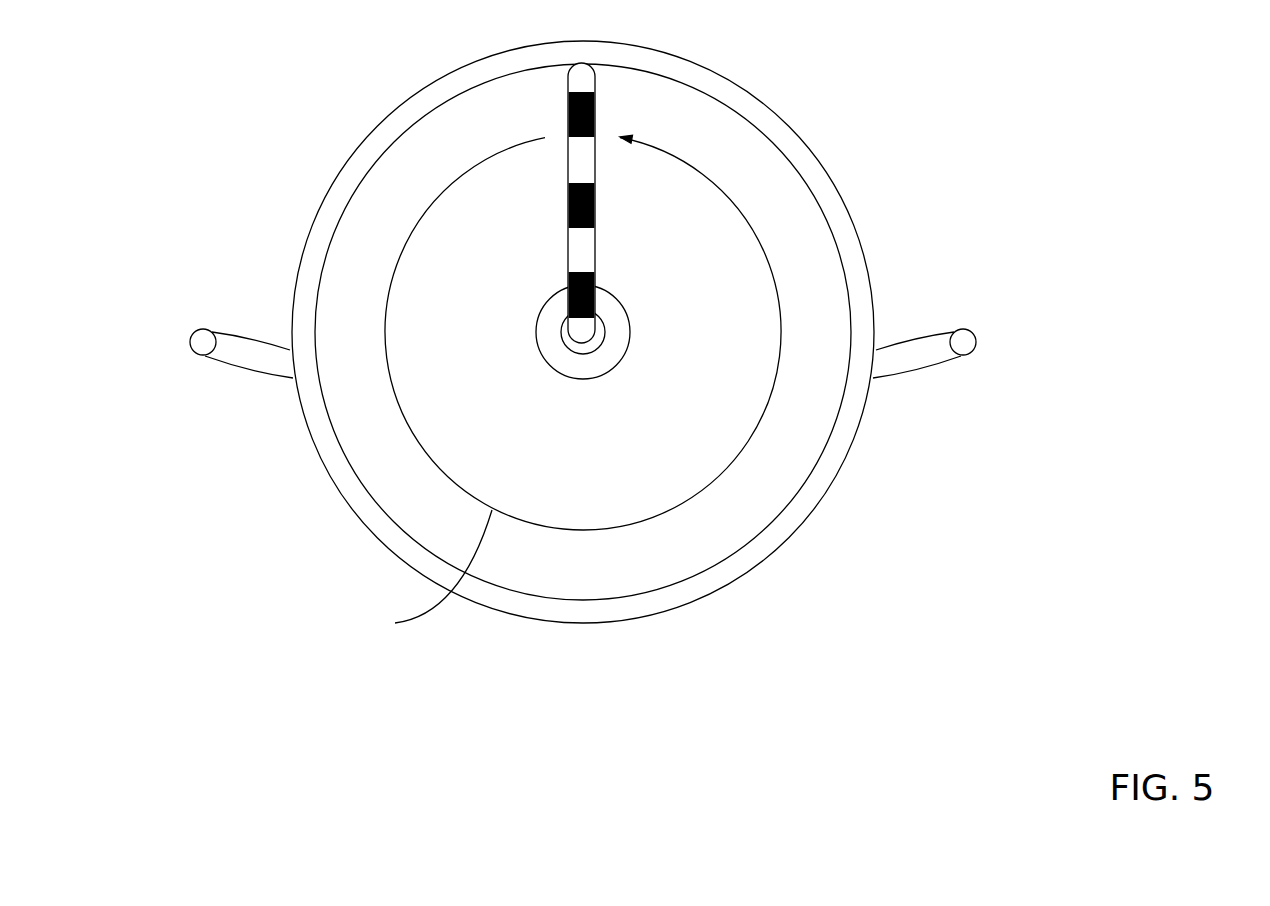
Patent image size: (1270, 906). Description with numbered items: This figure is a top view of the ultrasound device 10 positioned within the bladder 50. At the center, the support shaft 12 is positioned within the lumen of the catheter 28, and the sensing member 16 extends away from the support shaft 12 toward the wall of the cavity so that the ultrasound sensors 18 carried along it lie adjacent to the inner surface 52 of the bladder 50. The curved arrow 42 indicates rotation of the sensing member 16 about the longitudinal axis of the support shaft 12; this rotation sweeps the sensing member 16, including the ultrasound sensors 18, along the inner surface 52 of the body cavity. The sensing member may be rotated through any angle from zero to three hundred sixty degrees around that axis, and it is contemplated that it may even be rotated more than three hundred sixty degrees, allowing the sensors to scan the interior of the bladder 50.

The ultrasound device 10 is at (523, 368).
The support shaft 12 is at (607, 325).
The sensing member 16 is at (600, 188).
The ultrasound sensors 18 is at (597, 113).
The catheter 28 is at (607, 375).
The arrow 42 is at (426, 574).
The bladder 50 is at (840, 176).
The inner surface 52 is at (720, 555).